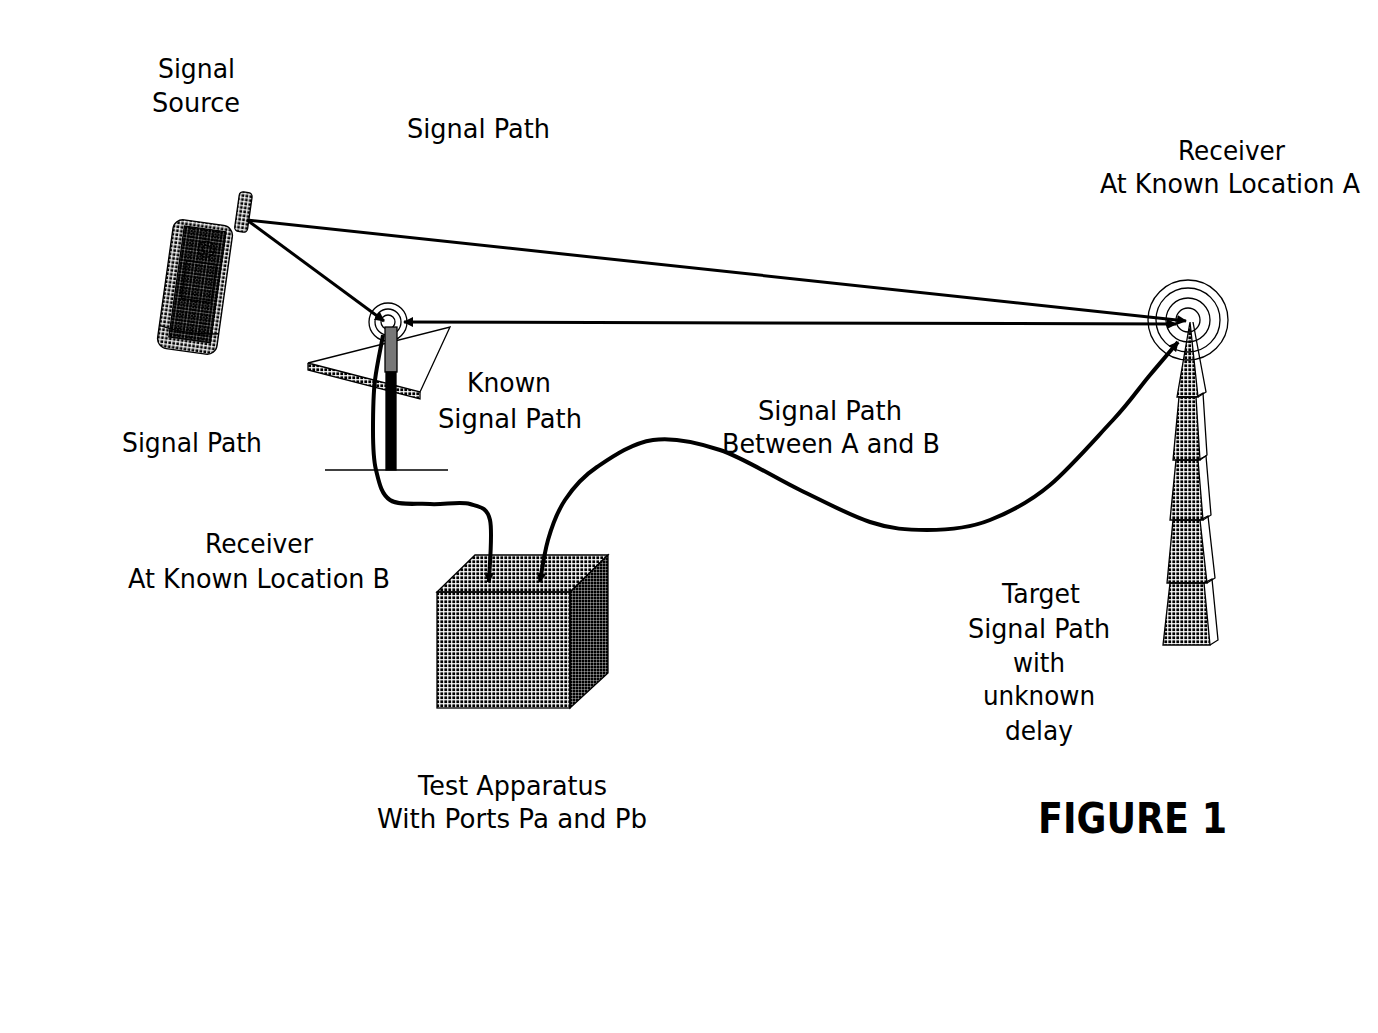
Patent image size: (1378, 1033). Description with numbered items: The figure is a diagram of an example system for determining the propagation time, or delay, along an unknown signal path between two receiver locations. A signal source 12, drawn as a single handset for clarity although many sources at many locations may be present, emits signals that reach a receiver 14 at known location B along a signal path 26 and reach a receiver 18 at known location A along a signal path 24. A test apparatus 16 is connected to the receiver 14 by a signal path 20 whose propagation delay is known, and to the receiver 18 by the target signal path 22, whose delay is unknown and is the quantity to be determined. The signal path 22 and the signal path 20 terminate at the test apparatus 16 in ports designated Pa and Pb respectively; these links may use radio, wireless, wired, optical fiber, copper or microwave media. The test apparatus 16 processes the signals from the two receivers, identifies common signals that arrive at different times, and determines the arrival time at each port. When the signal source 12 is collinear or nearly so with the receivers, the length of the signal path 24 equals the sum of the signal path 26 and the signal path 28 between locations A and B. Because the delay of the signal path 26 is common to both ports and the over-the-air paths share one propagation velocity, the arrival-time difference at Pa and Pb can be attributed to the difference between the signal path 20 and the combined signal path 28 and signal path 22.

The signal source 12 is at (199, 195).
The receiver 14 is at (337, 404).
The test apparatus 16 is at (508, 716).
The receiver 18 is at (1185, 266).
The signal path 20 is at (468, 488).
The signal path 22 is at (1016, 516).
The signal path 24 is at (414, 228).
The signal path 26 is at (306, 309).
The signal path 28 is at (781, 330).